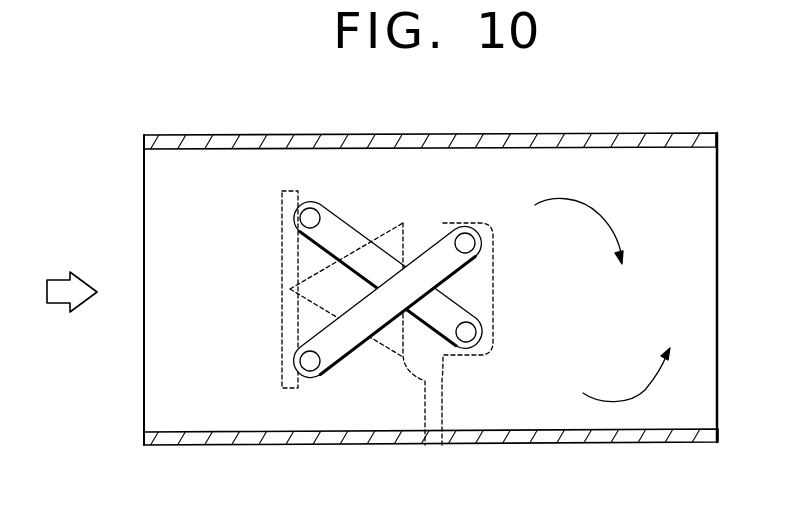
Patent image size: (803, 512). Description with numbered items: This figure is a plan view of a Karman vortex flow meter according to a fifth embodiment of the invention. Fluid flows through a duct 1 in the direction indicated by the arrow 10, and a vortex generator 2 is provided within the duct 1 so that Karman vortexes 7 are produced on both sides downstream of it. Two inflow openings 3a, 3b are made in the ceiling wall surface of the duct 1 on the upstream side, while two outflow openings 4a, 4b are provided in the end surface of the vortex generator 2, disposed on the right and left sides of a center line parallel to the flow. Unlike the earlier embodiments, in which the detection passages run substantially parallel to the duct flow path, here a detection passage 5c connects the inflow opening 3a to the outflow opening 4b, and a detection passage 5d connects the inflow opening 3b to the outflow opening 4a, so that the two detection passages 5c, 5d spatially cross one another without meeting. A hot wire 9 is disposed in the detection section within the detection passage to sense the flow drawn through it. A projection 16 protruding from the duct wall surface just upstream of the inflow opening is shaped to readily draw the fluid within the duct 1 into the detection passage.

The duct 1 is at (675, 133).
The vortex generator 2 is at (433, 445).
The inflow opening 3a is at (299, 364).
The inflow opening 3b is at (299, 218).
The outflow opening 4a is at (483, 346).
The outflow opening 4b is at (478, 230).
The detection passage 5c is at (333, 379).
The detection passage 5d is at (343, 207).
The Karman vortex 7 is at (572, 197).
The hot wire 9 is at (358, 277).
The arrow 10 is at (63, 310).
The projection 16 is at (282, 191).